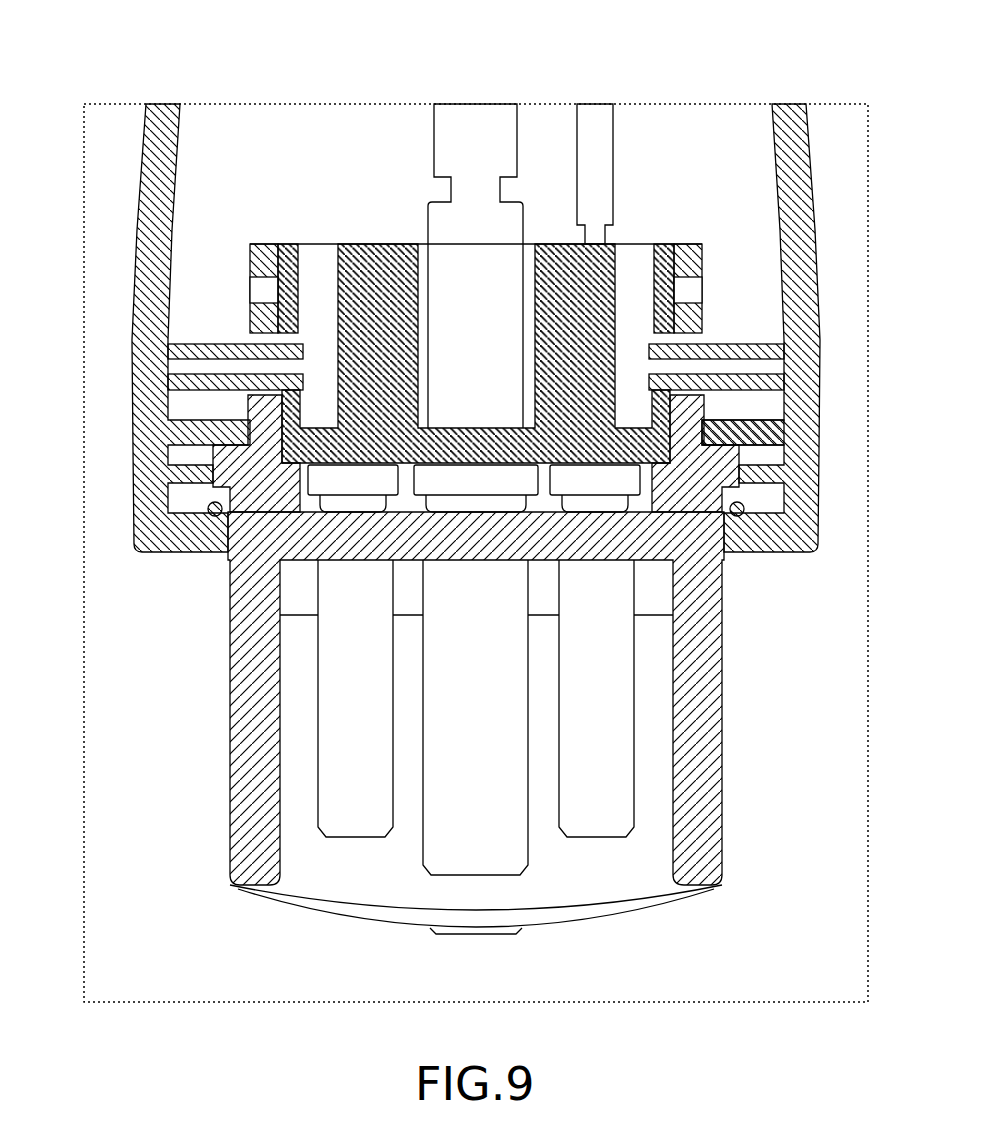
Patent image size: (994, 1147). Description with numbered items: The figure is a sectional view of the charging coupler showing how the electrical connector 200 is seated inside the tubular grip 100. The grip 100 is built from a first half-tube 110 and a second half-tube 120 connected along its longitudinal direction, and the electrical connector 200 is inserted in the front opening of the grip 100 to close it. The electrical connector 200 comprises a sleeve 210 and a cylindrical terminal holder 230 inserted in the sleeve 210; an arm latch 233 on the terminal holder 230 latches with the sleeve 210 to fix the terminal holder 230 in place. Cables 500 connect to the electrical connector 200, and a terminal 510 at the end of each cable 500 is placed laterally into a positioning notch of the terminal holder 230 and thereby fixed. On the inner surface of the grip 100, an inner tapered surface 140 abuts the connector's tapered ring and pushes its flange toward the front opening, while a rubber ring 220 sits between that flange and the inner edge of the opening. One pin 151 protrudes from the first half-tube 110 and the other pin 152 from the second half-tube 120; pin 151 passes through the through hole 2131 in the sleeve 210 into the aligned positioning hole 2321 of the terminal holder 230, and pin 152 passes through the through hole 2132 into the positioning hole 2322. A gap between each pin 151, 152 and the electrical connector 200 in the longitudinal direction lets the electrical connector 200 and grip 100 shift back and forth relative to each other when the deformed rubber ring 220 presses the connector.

The grip 100 is at (467, 123).
The first half-tube 110 is at (162, 143).
The second half-tube 120 is at (773, 143).
The inner tapered surface 140 is at (720, 445).
The pin 151 is at (245, 348).
The pin 152 is at (730, 345).
The electrical connector 200 is at (751, 806).
The sleeve 210 is at (760, 490).
The rubber ring 220 is at (780, 522).
The terminal holder 230 is at (328, 463).
The arm latch 233 is at (250, 287).
The cable 500 is at (452, 139).
The terminal 510 is at (492, 300).
The through hole 2131 is at (292, 338).
The through hole 2132 is at (702, 333).
The positioning hole 2321 is at (250, 320).
The positioning hole 2322 is at (702, 290).